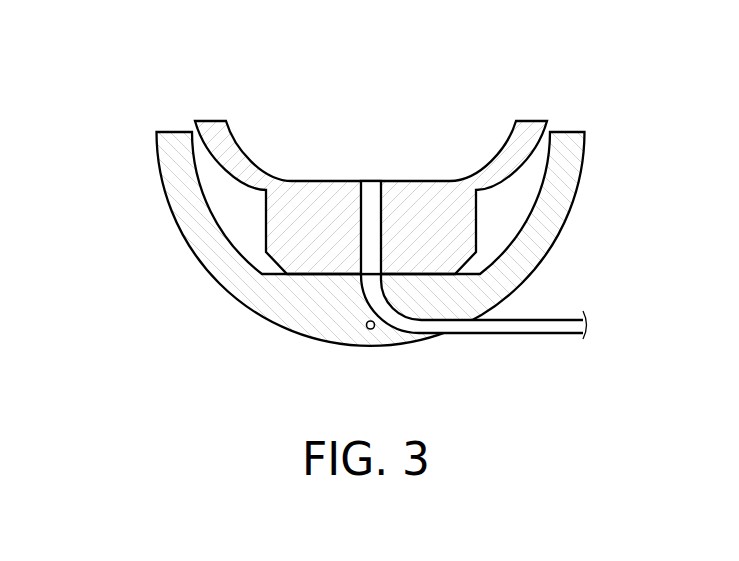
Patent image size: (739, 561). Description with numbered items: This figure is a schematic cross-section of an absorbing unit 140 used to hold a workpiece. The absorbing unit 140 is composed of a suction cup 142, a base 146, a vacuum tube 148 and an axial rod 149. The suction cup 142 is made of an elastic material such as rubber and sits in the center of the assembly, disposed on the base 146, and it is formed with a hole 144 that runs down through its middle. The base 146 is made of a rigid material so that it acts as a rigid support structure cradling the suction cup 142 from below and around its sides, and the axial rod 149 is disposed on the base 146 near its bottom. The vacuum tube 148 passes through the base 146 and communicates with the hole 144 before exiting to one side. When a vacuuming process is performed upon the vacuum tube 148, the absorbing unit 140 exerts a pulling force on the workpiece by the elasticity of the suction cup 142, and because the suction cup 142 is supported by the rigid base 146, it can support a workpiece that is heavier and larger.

The absorbing unit 140 is at (67, 32).
The suction cup 142 is at (532, 131).
The hole 144 is at (372, 164).
The base 146 is at (557, 188).
The vacuum tube 148 is at (553, 323).
The axial rod 149 is at (368, 329).